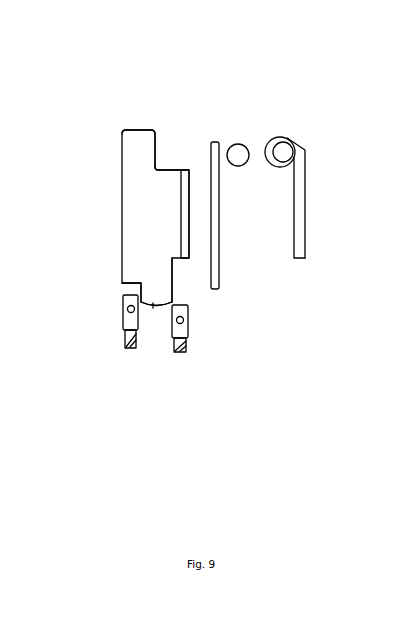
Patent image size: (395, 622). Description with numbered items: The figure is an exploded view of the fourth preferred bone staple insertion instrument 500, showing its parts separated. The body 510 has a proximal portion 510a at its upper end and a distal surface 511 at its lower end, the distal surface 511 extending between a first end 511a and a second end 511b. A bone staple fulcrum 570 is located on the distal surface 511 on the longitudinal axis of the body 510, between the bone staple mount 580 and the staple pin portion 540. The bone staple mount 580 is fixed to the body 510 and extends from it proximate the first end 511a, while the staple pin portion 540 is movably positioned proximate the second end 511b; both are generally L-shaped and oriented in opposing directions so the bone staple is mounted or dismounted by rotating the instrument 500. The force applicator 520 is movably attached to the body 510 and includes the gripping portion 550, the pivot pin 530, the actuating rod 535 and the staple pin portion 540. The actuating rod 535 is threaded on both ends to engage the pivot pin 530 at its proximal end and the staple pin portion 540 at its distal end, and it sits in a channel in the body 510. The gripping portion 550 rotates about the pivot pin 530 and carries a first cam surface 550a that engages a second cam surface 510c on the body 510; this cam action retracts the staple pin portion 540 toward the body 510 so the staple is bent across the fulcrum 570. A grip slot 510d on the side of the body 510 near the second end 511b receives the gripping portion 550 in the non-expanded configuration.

The bone staple insertion instrument 500 is at (100, 67).
The body 510 is at (135, 193).
The proximal portion 510a is at (136, 130).
The second cam surface 510c is at (168, 168).
The grip slot 510d is at (184, 172).
The distal surface 511 is at (145, 312).
The first end 511a is at (123, 283).
The second end 511b is at (165, 305).
The force applicator 520 is at (327, 140).
The pivot pin 530 is at (236, 156).
The actuating rod 535 is at (216, 263).
The staple pin portion 540 is at (190, 343).
The gripping portion 550 is at (301, 222).
The first cam surface 550a is at (278, 134).
The bone staple fulcrum 570 is at (153, 303).
The bone staple mount 580 is at (125, 332).